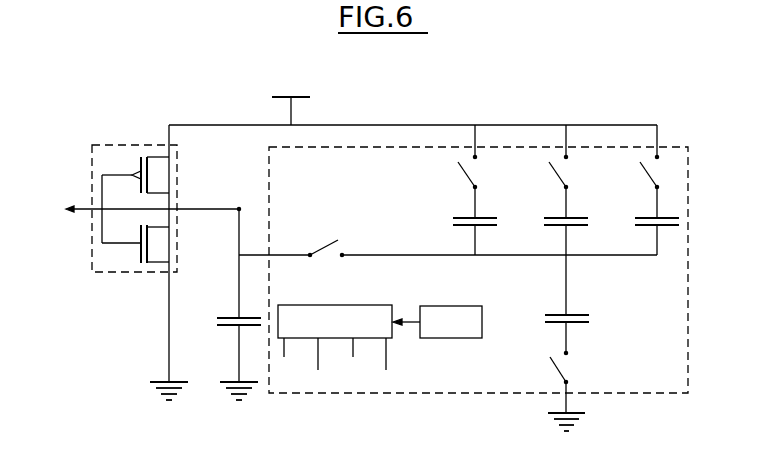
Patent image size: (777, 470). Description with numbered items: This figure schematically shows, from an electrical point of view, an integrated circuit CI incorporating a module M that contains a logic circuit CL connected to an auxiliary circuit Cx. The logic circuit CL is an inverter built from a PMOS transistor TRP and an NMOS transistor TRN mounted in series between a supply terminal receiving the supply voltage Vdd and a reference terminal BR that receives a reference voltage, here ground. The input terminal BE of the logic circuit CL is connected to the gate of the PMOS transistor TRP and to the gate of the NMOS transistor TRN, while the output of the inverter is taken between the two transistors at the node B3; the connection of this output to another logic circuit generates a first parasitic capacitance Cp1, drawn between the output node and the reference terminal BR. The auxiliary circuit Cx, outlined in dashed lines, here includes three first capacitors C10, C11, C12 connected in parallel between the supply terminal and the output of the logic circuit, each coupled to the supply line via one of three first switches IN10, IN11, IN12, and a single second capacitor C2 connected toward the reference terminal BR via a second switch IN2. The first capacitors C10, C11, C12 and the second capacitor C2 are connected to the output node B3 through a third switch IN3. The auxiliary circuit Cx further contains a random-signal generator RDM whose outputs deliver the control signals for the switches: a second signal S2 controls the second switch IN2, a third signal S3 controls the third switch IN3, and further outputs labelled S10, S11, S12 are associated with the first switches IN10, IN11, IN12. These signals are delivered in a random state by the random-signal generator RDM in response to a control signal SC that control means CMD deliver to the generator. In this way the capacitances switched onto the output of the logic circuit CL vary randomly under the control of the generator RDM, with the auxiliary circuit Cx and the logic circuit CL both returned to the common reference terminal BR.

The logic circuit CL is at (124, 144).
The input terminal BE is at (69, 204).
The PMOS transistor TRP is at (163, 178).
The NMOS transistor TRN is at (163, 241).
The node B3 is at (241, 205).
The supply voltage Vdd is at (291, 102).
The first switch IN10 is at (466, 153).
The first switch IN11 is at (558, 153).
The first switch IN12 is at (648, 153).
The switch S10 is at (456, 176).
The switch S11 is at (547, 176).
The switch S12 is at (637, 176).
The first capacitor C10 is at (463, 230).
The first capacitor C11 is at (554, 228).
The first capacitor C12 is at (644, 228).
The third signal S3 is at (323, 234).
The third switch IN3 is at (327, 257).
The first parasitic capacitance Cp1 is at (225, 317).
The module M is at (103, 326).
The reference terminal BR is at (140, 382).
The integrated circuit CI is at (104, 408).
The auxiliary circuit Cx is at (340, 394).
The random-signal generator RDM is at (336, 346).
The control means CMD is at (437, 322).
The control signal SC is at (402, 326).
The second capacitor C2 is at (558, 313).
The second switch IN2 is at (561, 353).
The second signal S2 is at (548, 371).